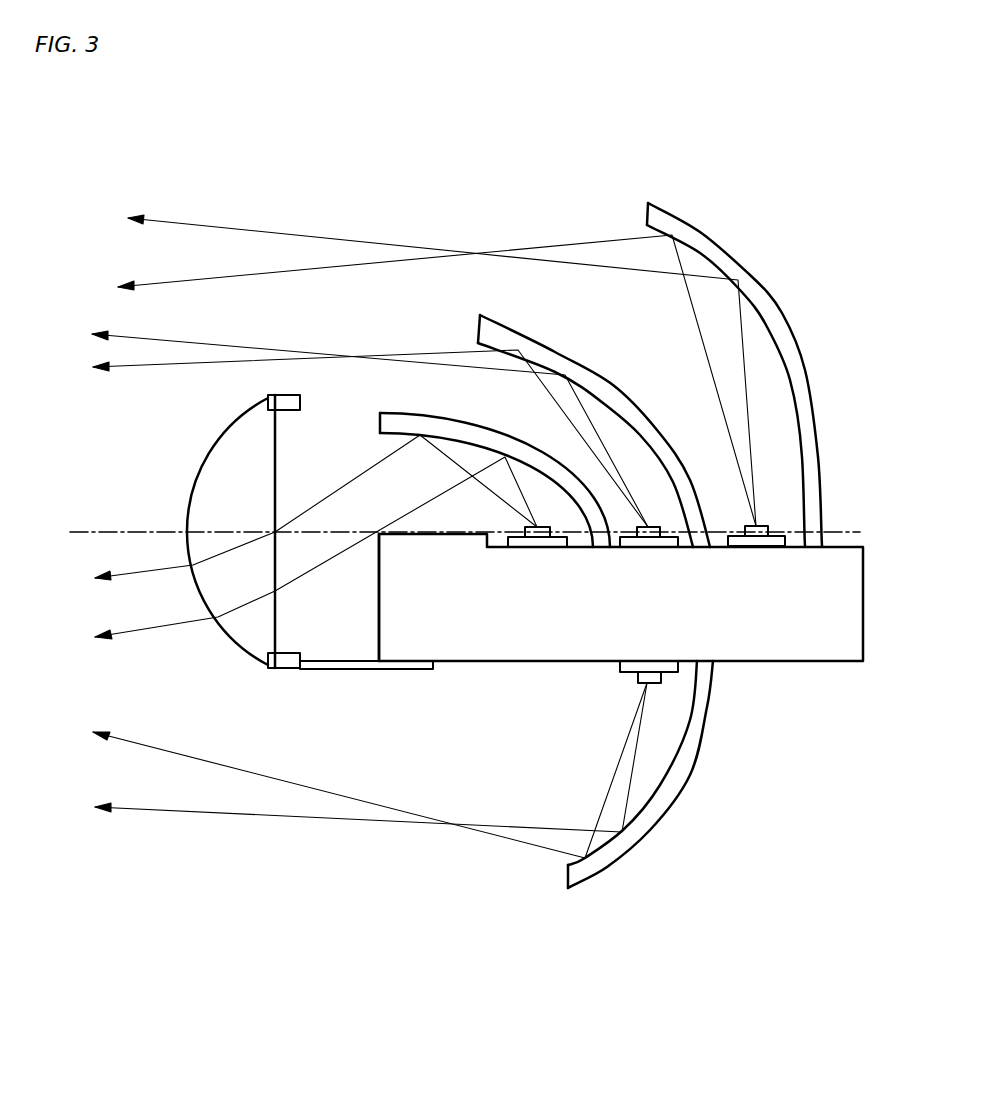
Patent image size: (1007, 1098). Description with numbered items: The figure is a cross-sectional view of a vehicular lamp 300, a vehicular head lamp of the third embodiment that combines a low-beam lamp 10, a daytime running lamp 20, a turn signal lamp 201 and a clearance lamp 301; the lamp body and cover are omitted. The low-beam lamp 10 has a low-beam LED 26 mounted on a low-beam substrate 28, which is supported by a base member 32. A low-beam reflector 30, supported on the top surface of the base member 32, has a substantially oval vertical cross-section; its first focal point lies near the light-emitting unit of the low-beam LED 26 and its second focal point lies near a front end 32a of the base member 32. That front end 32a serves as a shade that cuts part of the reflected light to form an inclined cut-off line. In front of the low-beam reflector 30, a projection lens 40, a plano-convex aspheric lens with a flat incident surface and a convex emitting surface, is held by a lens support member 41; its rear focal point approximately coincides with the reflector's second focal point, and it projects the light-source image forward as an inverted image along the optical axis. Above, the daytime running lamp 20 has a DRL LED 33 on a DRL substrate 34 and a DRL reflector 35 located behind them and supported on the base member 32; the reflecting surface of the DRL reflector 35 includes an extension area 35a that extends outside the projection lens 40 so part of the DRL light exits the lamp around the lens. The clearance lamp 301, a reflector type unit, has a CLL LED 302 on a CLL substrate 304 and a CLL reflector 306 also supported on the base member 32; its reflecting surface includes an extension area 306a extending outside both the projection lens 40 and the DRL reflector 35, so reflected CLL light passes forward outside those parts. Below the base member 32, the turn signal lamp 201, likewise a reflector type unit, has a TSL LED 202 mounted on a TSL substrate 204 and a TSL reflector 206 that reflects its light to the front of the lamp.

The vehicular lamp 300 is at (385, 148).
The clearance lamp 301 is at (622, 215).
The turn signal lamp 201 is at (533, 877).
The daytime running lamp 20 is at (463, 320).
The low-beam lamp 10 is at (210, 437).
The projection lens 40 is at (205, 470).
The lens support member 41 is at (346, 670).
The low-beam reflector 30 is at (385, 436).
The low-beam LED 26 is at (526, 531).
The low-beam substrate 28 is at (560, 536).
The base member 32 is at (850, 546).
The front end of the base member 32a is at (379, 532).
The DRL LED 33 is at (648, 526).
The DRL substrate 34 is at (662, 537).
The DRL reflector 35 is at (600, 370).
The extension area 35a is at (530, 365).
The CLL LED 302 is at (762, 526).
The CLL substrate 304 is at (735, 535).
The CLL reflector 306 is at (792, 320).
The extension area 306a is at (712, 298).
The TSL LED 202 is at (642, 683).
The TSL substrate 204 is at (622, 672).
The TSL reflector 206 is at (676, 795).